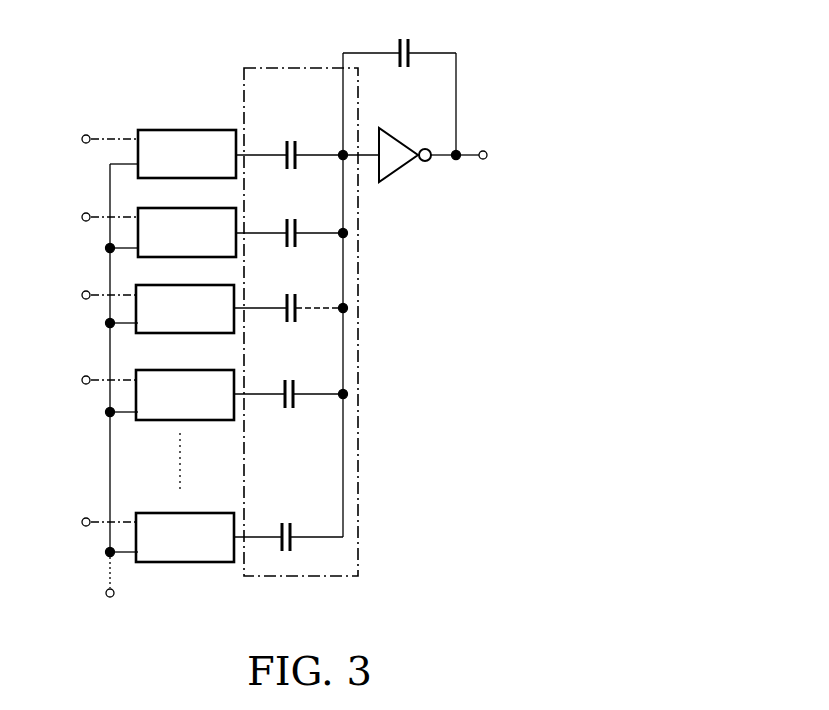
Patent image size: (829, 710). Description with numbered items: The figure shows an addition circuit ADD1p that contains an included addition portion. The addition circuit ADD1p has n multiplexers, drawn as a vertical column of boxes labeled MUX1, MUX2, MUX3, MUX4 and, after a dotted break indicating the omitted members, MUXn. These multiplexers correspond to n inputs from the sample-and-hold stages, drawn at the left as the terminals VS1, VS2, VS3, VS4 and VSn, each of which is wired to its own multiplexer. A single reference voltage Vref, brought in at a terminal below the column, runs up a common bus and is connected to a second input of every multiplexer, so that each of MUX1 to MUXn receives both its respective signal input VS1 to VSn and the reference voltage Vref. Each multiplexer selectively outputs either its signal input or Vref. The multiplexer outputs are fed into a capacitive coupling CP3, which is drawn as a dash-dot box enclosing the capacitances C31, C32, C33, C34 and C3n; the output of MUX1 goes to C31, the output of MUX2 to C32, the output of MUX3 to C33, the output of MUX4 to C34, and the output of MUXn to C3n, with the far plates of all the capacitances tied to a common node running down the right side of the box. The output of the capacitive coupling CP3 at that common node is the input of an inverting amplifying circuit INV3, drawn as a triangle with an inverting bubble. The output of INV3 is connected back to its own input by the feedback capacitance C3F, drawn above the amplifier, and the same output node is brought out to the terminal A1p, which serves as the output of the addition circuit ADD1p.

The multiplexer MUX1 is at (187, 154).
The multiplexer MUX2 is at (187, 232).
The multiplexer MUX3 is at (185, 309).
The multiplexer MUX4 is at (185, 395).
The multiplexer MUXn is at (185, 537).
The capacitance C31 is at (289, 131).
The capacitance C32 is at (289, 213).
The capacitance C33 is at (288, 292).
The capacitance C34 is at (288, 377).
The capacitance C3n is at (288, 516).
The feedback capacitance C3F is at (398, 83).
The capacitive coupling CP3 is at (358, 443).
The inverting amplifying circuit INV3 is at (394, 173).
The input VS1 is at (84, 119).
The input VS2 is at (84, 200).
The input VS3 is at (84, 281).
The input VS4 is at (84, 362).
The input VSn is at (84, 501).
The reference voltage Vref is at (71, 603).
The output A1p is at (498, 154).
The addition circuit ADD1p is at (489, 80).